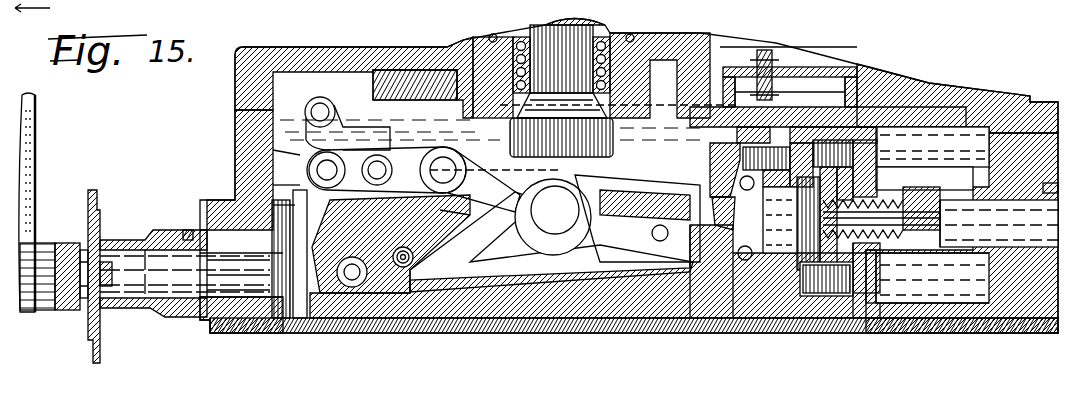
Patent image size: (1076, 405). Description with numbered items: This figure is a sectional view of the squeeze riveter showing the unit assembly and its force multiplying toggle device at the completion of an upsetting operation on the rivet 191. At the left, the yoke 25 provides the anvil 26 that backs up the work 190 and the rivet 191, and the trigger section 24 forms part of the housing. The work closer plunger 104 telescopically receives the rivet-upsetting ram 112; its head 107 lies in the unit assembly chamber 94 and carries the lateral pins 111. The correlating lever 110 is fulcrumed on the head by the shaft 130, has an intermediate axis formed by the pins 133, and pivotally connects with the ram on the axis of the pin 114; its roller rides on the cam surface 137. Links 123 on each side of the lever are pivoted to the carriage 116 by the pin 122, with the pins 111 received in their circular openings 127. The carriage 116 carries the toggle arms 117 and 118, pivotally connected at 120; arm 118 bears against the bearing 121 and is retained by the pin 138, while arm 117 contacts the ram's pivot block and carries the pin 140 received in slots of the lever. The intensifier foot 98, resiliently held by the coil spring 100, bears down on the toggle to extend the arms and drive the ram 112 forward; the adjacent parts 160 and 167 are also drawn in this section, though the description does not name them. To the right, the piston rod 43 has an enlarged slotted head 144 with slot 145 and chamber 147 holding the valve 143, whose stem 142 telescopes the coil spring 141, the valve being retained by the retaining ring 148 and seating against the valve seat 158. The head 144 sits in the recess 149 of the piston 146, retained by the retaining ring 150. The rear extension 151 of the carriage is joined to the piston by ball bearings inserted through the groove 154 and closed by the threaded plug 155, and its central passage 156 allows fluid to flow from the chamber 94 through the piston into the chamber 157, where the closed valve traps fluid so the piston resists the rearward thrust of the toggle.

The trigger section 24 is at (1042, 305).
The yoke 25 is at (32, 118).
The anvil 26 is at (64, 243).
The piston rod 43 is at (999, 223).
The unit assembly chamber 94 is at (446, 25).
The intensifier foot 98 is at (553, 40).
The coil spring 100 is at (493, 12).
The work closer plunger 104 is at (200, 358).
The head 107 is at (222, 180).
The correlating lever 110 is at (270, 347).
The pin 111 is at (225, 150).
The rivet-upsetting ram 112 is at (147, 345).
The pin 114 is at (323, 350).
The carriage 116 is at (497, 348).
The toggle arm 117 is at (459, 238).
The toggle arm 118 is at (562, 257).
The pivot 120 is at (563, 137).
The bearing 121 is at (647, 350).
The pin 122 is at (455, 213).
The link 123 is at (410, 123).
The circular opening 127 is at (230, 130).
The shaft 130 is at (337, 33).
The pin 133 is at (390, 212).
The cam surface 137 is at (390, 27).
The pin 138 is at (287, 25).
The pin 140 is at (383, 350).
The coil spring 141 is at (952, 207).
The stem 142 is at (925, 205).
The valve 143 is at (796, 306).
The head 144 is at (882, 173).
The slot 145 is at (859, 350).
The piston 146 is at (757, 365).
The chamber 147 is at (882, 257).
The retaining ring 148 is at (809, 353).
The recess 149 is at (889, 273).
The retaining ring 150 is at (896, 293).
The rear extension 151 is at (693, 350).
The groove 154 is at (683, 47).
The threaded plug 155 is at (813, 28).
The central passage 156 is at (650, 125).
The chamber 157 is at (983, 70).
The valve seat 158 is at (892, 143).
The block 160 is at (630, 10).
The screw 167 is at (740, 20).
The work 190 is at (120, 183).
The rivet 191 is at (107, 333).